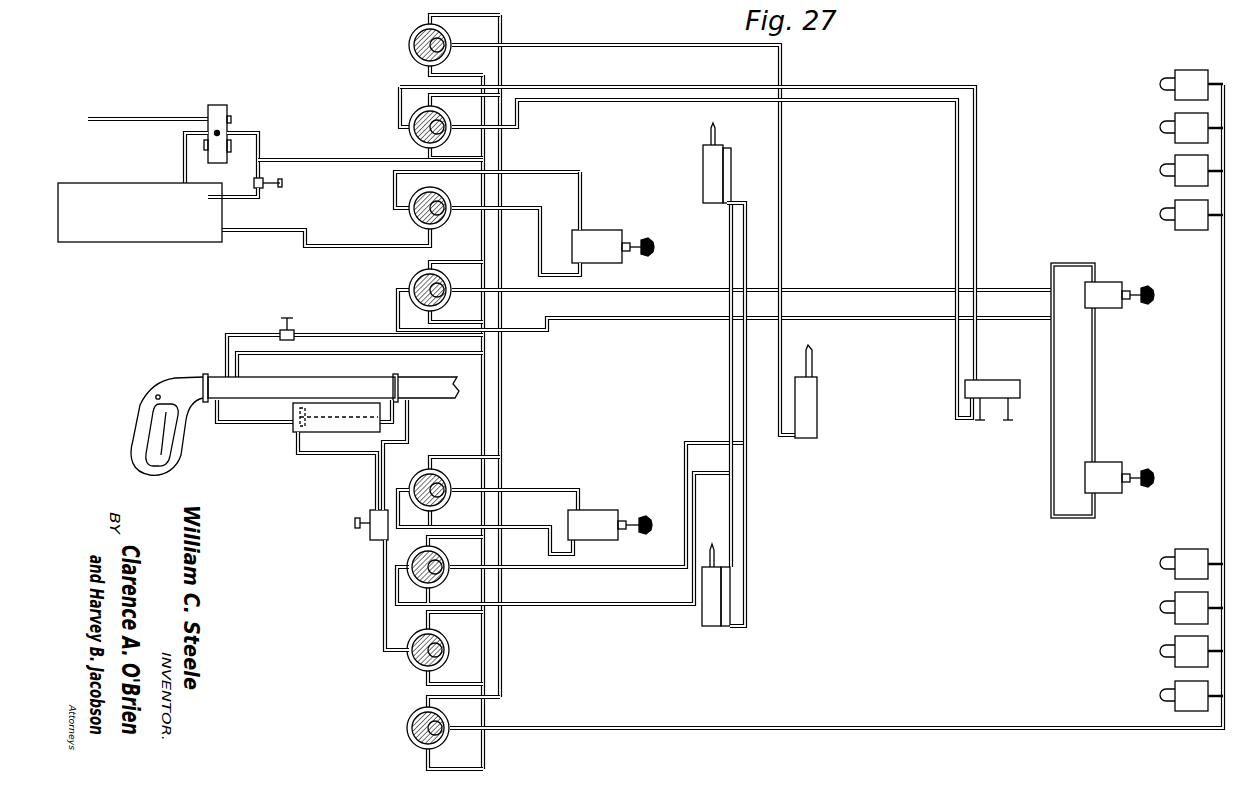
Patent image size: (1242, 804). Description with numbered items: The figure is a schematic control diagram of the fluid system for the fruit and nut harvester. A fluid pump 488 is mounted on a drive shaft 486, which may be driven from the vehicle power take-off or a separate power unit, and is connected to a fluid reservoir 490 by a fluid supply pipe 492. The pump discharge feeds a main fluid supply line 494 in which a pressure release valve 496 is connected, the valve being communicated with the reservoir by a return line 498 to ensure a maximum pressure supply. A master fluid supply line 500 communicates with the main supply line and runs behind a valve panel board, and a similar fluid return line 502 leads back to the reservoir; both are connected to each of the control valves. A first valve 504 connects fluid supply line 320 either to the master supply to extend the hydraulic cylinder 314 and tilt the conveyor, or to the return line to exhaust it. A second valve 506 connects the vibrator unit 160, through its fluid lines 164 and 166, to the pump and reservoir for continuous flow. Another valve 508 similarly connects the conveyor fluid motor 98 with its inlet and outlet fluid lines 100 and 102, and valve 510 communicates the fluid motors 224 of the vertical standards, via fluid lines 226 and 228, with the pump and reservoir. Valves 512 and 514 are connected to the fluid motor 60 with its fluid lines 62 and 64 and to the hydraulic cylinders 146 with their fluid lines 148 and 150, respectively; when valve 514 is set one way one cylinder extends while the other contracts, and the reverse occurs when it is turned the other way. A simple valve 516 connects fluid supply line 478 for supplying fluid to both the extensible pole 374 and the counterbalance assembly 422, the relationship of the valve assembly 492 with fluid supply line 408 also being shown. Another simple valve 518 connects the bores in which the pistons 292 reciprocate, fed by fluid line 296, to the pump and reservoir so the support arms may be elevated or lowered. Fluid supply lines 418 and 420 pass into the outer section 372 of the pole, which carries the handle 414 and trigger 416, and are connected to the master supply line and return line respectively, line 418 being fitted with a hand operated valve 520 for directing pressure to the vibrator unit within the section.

The fluid motor 60 is at (606, 510).
The fluid line 62 is at (520, 530).
The fluid line 64 is at (572, 490).
The fluid motor 98 is at (608, 232).
The inlet fluid line 100 is at (542, 250).
The outlet fluid line 102 is at (583, 220).
The extensible hydraulic cylinder 146 is at (702, 160).
The fluid line 148 is at (732, 176).
The fluid line 150 is at (747, 227).
The vibrator unit 160 is at (1006, 378).
The fluid line 164 is at (977, 360).
The fluid line 166 is at (955, 375).
The fluid motor 224 is at (1107, 280).
The fluid line 226 is at (1097, 312).
The fluid line 228 is at (1082, 263).
The elongated piston 292 is at (1162, 86).
The fluid line 296 is at (1213, 82).
The extensible hydraulic cylinder 314 is at (818, 394).
The fluid supply line 320 is at (785, 276).
The outer section 372 is at (292, 386).
The extensible pole 374 is at (450, 380).
The fluid supply line 408 is at (410, 422).
The handle 414 is at (154, 392).
The trigger 416 is at (153, 425).
The fluid supply line 418 is at (234, 333).
The fluid supply line 420 is at (360, 374).
The counterbalance assembly 422 is at (339, 430).
The fluid supply line 478 is at (383, 593).
The drive shaft 486 is at (157, 118).
The fluid pump 488 is at (224, 110).
The fluid reservoir 490 is at (137, 233).
The fluid supply pipe 492 is at (184, 167).
The main fluid supply line 494 is at (259, 135).
The pressure release valve 496 is at (253, 183).
The return line 498 is at (240, 200).
The master fluid supply line 500 is at (503, 147).
The fluid return line 502 is at (486, 423).
The first valve 504 is at (409, 50).
The second valve 506 is at (409, 134).
The valve 508 is at (411, 214).
The valve 510 is at (409, 278).
The valve 512 is at (415, 479).
The valve 514 is at (458, 555).
The simple valve 516 is at (408, 660).
The simple valve 518 is at (407, 725).
The hand operated valve 520 is at (292, 330).